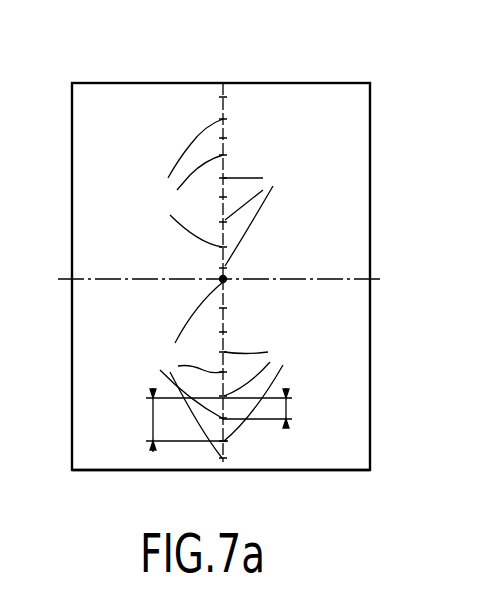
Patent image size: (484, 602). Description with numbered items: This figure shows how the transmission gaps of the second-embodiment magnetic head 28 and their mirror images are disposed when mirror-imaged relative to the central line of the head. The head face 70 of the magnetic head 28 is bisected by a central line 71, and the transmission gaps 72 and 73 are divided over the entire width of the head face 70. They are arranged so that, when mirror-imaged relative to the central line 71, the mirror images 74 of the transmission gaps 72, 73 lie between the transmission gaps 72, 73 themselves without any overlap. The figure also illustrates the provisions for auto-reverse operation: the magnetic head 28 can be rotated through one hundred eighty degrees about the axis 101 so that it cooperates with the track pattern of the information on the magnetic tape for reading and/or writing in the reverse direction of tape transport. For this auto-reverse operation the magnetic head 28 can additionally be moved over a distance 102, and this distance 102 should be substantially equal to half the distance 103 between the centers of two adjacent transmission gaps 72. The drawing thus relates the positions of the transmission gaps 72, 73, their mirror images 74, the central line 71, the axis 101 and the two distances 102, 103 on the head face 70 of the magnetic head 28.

The magnetic head 28 is at (88, 82).
The head face 70 is at (103, 462).
The central line 71 is at (375, 273).
The transmission gaps 72 is at (224, 138).
The transmission gaps 73 is at (223, 97).
The mirror images 74 is at (222, 197).
The axis 101 is at (224, 283).
The distance 102 is at (290, 409).
The distance 103 is at (153, 417).